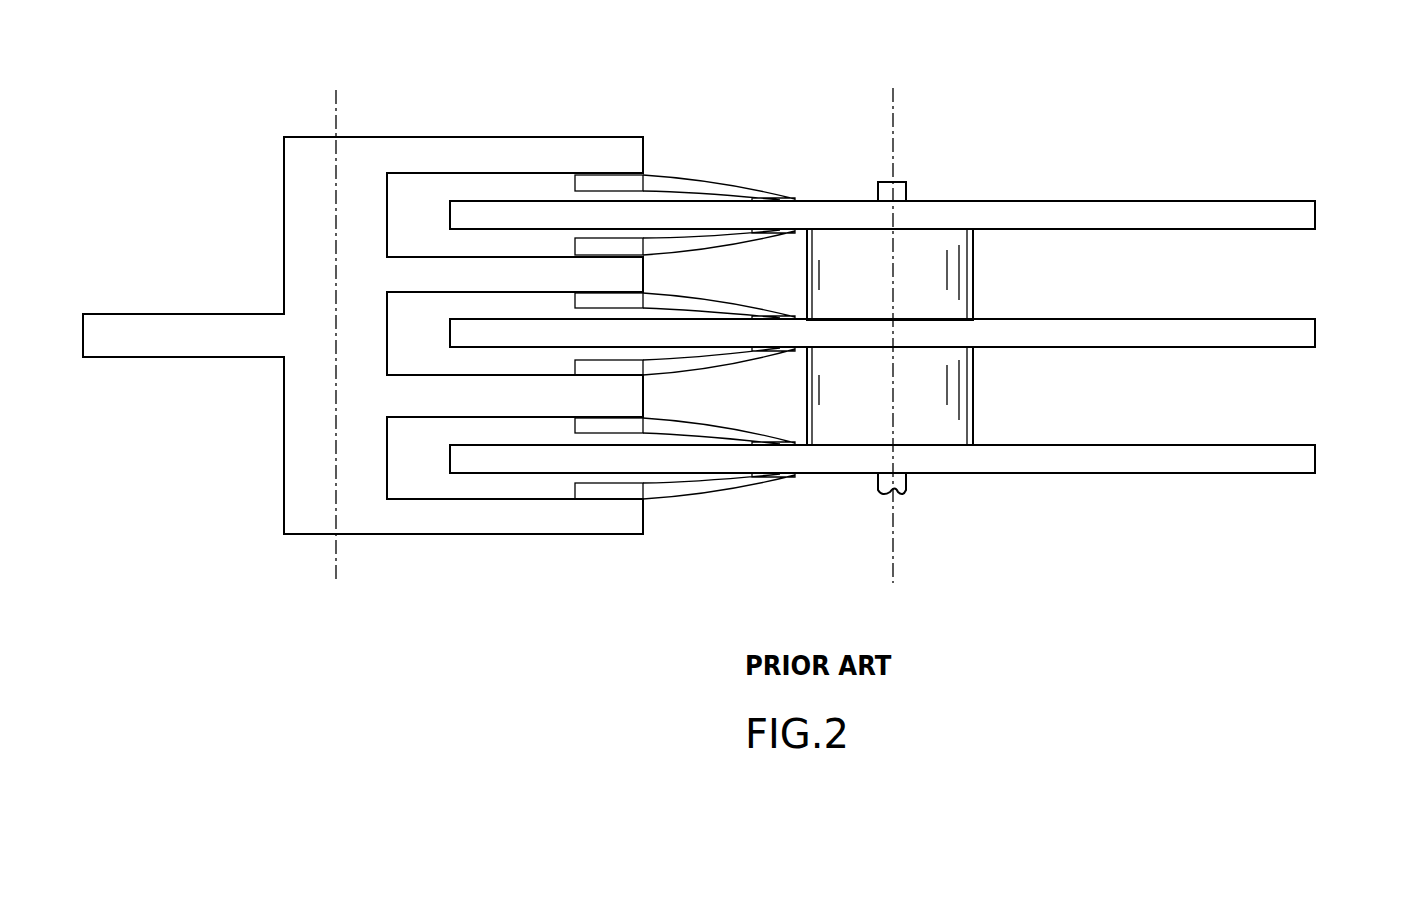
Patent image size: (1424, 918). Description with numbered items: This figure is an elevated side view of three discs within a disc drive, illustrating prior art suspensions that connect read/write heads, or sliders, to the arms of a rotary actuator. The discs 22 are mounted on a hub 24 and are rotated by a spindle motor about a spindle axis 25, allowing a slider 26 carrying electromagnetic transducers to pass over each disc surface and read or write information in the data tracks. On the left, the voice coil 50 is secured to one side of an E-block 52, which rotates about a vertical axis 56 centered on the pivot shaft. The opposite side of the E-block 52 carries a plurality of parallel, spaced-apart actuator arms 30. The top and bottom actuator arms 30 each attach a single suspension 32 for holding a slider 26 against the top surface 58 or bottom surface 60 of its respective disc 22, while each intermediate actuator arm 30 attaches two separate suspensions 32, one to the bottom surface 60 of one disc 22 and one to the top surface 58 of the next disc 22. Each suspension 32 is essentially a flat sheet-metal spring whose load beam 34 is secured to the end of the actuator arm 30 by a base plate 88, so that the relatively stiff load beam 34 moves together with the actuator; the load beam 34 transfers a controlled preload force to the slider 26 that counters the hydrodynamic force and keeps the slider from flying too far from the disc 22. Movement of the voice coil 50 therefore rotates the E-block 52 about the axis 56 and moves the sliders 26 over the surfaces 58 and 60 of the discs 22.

The E-block 52 is at (366, 72).
The actuator arm 30 is at (397, 137).
The vertical axis 56 is at (332, 548).
The voice coil 50 is at (172, 314).
The base plate 88 is at (560, 190).
The suspension 32 is at (723, 168).
The load beam 34 is at (728, 236).
The slider 26 is at (795, 200).
The top surface 58 is at (1125, 201).
The bottom surface 60 is at (1198, 230).
The disc 22 is at (1318, 215).
The hub 24 is at (973, 290).
The spindle axis 25 is at (893, 533).